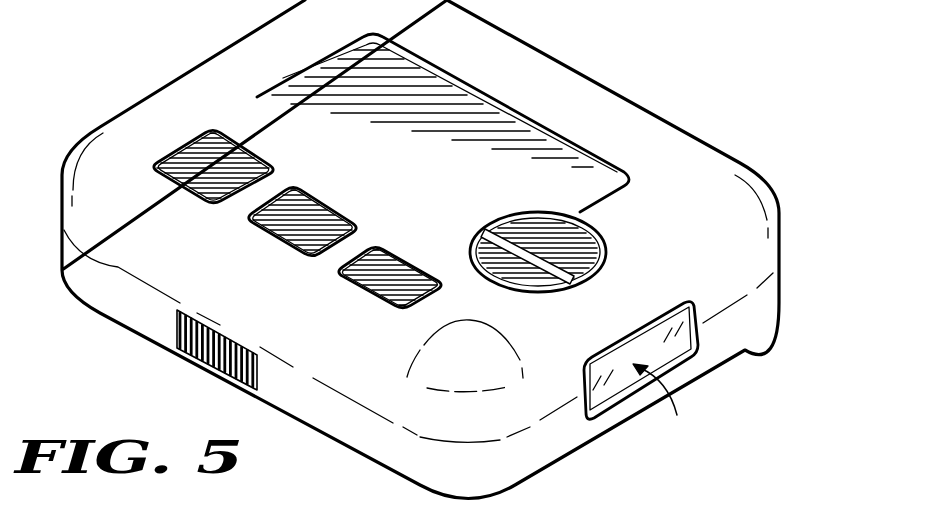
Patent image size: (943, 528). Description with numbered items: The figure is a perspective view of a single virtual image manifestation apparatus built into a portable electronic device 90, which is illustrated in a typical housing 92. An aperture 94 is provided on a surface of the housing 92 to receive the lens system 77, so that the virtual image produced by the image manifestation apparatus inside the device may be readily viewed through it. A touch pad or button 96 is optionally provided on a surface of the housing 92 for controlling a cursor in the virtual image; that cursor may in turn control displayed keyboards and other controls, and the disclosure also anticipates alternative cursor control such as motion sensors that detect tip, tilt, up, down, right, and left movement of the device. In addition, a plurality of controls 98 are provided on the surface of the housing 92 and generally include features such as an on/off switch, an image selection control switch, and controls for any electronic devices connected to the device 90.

The portable electronic device 90 is at (90, 392).
The housing 92 is at (779, 250).
The aperture 94 is at (690, 377).
The touch pad or button 96 is at (231, 335).
The controls 98 is at (258, 147).
The lens system 77 is at (666, 403).